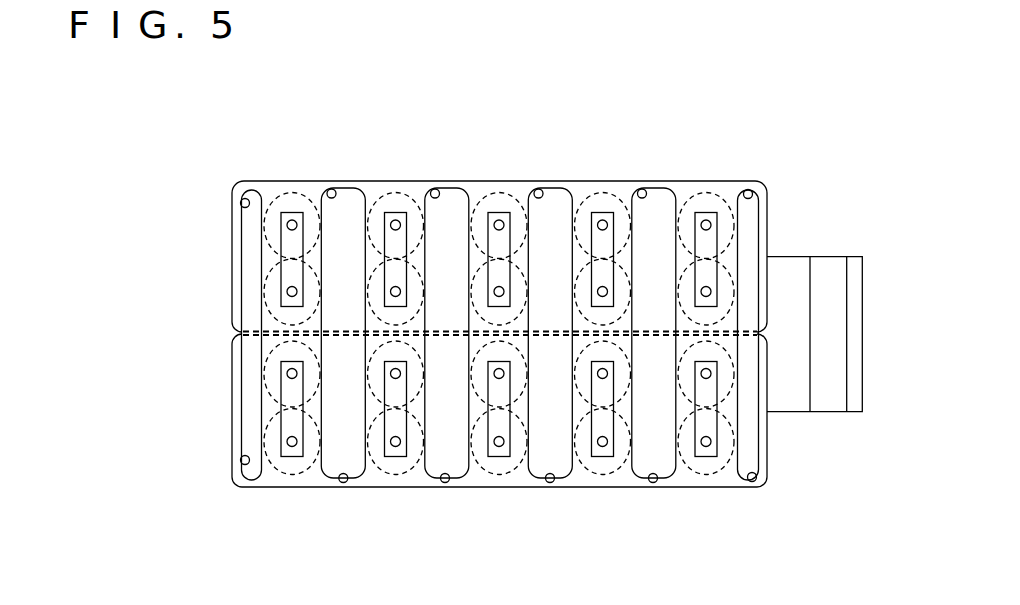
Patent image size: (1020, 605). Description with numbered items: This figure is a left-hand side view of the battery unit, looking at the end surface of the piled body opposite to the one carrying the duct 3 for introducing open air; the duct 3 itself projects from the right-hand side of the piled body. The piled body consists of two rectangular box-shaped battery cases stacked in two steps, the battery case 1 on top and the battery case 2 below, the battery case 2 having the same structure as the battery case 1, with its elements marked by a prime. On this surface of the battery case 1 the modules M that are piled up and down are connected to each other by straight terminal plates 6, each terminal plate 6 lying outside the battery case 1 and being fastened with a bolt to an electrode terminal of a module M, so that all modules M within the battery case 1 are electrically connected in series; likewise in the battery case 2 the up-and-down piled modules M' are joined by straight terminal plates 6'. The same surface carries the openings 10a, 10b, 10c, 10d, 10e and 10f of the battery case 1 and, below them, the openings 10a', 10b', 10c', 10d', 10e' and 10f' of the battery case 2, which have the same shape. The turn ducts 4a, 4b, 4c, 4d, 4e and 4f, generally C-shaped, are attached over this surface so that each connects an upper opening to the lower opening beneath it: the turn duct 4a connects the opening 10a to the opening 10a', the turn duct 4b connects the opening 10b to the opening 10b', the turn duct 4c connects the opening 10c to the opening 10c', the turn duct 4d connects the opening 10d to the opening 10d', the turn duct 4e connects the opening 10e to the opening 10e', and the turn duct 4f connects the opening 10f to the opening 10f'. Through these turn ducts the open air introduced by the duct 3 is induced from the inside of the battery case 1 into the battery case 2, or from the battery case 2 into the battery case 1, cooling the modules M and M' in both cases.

The battery case 1 is at (501, 181).
The battery case 2 is at (533, 488).
The duct for introducing open air 3 is at (795, 246).
The turn duct 4a is at (763, 210).
The turn duct 4b is at (660, 188).
The turn duct 4c is at (556, 188).
The turn duct 4d is at (455, 188).
The turn duct 4e is at (352, 188).
The turn duct 4f is at (241, 235).
The terminal plate 6 is at (499, 260).
The terminal plate 6' is at (499, 409).
The opening 10a is at (743, 163).
The opening 10b is at (636, 163).
The opening 10c is at (527, 163).
The opening 10d is at (429, 163).
The opening 10e is at (324, 163).
The opening 10f is at (211, 207).
The opening 10a' is at (773, 508).
The opening 10b' is at (657, 514).
The opening 10c' is at (561, 515).
The opening 10d' is at (446, 513).
The opening 10e' is at (341, 513).
The opening 10f' is at (204, 465).
The module M is at (499, 229).
The module M' is at (500, 439).